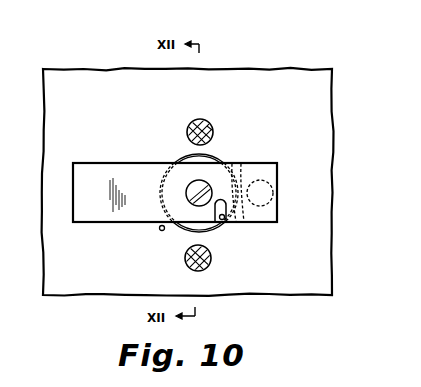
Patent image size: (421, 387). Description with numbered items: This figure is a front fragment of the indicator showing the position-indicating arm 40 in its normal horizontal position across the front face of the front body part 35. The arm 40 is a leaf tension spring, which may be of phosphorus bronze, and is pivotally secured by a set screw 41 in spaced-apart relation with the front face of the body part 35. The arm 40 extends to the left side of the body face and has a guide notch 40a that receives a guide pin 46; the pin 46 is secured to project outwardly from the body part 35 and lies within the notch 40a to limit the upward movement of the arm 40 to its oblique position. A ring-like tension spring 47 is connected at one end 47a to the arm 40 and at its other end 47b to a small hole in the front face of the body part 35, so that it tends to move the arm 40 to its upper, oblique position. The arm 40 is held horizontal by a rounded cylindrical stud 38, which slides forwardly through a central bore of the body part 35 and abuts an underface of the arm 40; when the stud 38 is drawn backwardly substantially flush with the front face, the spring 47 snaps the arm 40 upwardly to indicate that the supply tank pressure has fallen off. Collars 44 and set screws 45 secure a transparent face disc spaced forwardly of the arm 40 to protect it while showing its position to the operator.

The front body part 35 is at (97, 67).
The stud 38 is at (276, 185).
The position-indicating arm 40 is at (88, 162).
The guide notch 40a is at (228, 215).
The set screw 41 is at (190, 183).
The collars 44 is at (204, 120).
The set screws 45 is at (214, 131).
The guide pin 46 is at (222, 222).
The ring-like tension spring 47 is at (186, 236).
The spring end 47a is at (157, 231).
The spring other end 47b is at (244, 172).